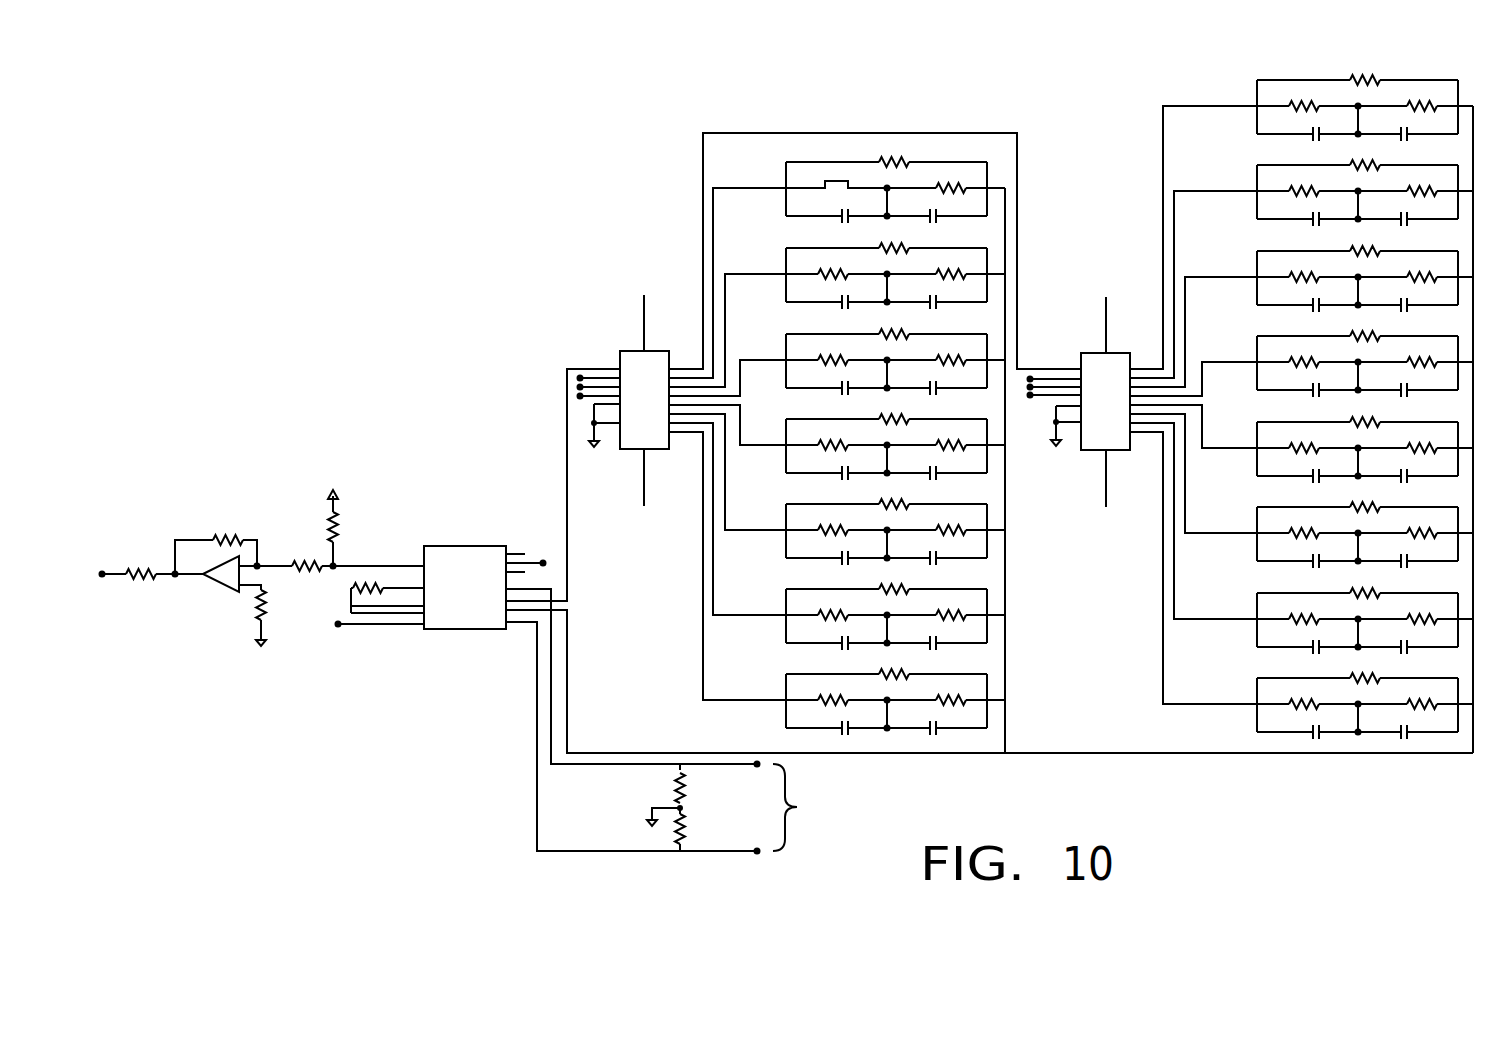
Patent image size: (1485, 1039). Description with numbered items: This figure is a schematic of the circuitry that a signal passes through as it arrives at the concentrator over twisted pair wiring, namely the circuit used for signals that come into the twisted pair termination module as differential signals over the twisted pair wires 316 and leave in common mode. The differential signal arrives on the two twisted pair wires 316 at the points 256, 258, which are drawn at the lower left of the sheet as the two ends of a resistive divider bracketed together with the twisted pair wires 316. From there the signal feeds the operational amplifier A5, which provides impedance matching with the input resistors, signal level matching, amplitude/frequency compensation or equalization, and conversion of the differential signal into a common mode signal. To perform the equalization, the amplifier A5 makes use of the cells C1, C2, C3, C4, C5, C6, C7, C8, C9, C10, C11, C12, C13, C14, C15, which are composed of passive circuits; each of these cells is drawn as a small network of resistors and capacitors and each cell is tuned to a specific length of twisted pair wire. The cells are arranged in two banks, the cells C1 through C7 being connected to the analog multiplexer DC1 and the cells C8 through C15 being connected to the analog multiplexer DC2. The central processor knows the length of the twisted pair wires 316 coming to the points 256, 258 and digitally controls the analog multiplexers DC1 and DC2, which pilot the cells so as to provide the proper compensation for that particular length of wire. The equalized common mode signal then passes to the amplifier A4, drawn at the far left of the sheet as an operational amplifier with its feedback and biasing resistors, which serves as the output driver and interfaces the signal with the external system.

The amplifier A4 is at (218, 585).
The operational amplifier A5 is at (455, 630).
The analog multiplexer DC1 is at (628, 352).
The analog multiplexer DC2 is at (1093, 356).
The point 256 is at (757, 778).
The point 258 is at (757, 838).
The twisted pair wires 316 is at (811, 807).
The cell C1 is at (868, 192).
The cell C2 is at (868, 278).
The cell C3 is at (868, 364).
The cell C4 is at (868, 449).
The cell C5 is at (868, 534).
The cell C6 is at (868, 619).
The cell C7 is at (868, 704).
The cell C8 is at (1339, 109).
The cell C9 is at (1339, 194).
The cell C10 is at (1332, 280).
The cell C11 is at (1332, 365).
The cell C12 is at (1332, 451).
The cell C13 is at (1332, 536).
The cell C14 is at (1332, 622).
The cell C15 is at (1332, 707).